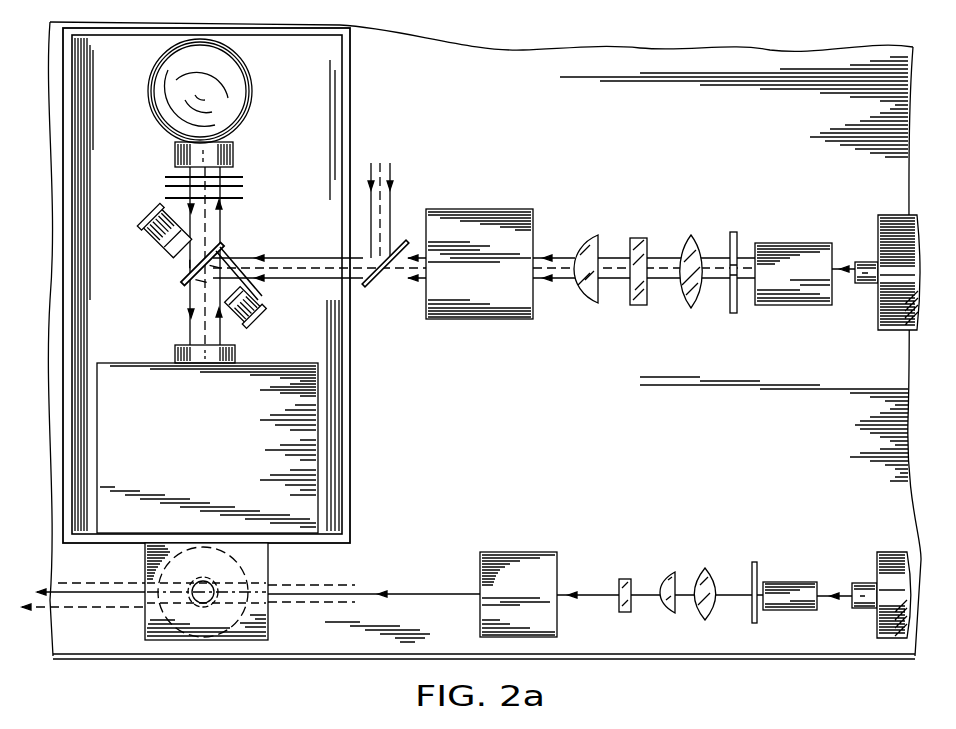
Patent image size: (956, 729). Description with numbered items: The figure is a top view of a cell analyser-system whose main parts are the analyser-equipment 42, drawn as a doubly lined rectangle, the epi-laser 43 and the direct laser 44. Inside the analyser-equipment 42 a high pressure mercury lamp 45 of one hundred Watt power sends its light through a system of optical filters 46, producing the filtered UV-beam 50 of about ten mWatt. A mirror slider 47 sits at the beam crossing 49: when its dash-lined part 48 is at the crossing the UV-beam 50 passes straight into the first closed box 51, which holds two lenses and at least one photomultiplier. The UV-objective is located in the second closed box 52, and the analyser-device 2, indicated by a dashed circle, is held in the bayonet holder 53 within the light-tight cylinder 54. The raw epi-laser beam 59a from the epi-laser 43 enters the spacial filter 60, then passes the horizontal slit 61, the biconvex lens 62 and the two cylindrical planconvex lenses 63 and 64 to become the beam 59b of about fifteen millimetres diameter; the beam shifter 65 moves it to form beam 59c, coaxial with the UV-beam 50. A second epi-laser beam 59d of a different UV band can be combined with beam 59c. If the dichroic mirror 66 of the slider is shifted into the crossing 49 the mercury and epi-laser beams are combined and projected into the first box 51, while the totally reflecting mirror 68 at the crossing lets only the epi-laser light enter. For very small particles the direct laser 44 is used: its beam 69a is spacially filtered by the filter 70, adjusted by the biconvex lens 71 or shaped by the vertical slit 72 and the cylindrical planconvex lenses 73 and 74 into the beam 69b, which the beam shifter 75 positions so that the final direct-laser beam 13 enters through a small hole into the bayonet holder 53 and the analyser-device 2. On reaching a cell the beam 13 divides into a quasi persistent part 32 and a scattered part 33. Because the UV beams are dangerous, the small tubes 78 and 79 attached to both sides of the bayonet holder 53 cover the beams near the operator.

The analyser-device 2 is at (232, 572).
The direct-laser beam 13 is at (413, 594).
The quasi persistent part of direct-laser beam 32 is at (58, 583).
The scattered part of direct-laser beam 33 is at (63, 612).
The analyser-equipment 42 is at (346, 363).
The epi-laser 43 is at (890, 248).
The direct laser 44 is at (880, 570).
The high pressure mercury lamp 45 is at (234, 73).
The system of optical filters 46 is at (172, 158).
The mirror slider 47 is at (262, 312).
The dash-lined part of mirror slider 48 is at (238, 318).
The beam crossing 49 is at (252, 280).
The filtered UV-beam 50 is at (168, 205).
The first closed box 51 is at (318, 449).
The second closed box 52 is at (268, 548).
The bayonet holder 53 is at (162, 620).
The light-tight cylinder 54 is at (250, 618).
The raw epi-laser beam 59a is at (848, 276).
The epi-laser beam of about fifteen mm diameter 59b is at (553, 285).
The shifted epi-laser beam 59c is at (310, 270).
The second epi-laser beam 59d is at (365, 163).
The spacial filter 60 is at (772, 252).
The horizontal slit 61 is at (733, 298).
The biconvex lens 62 is at (688, 258).
The cylindrical planconvex lens 63 is at (640, 302).
The cylindrical planconvex lens 64 is at (585, 250).
The beam shifter 65 is at (477, 213).
The dichroic mirror 66 is at (186, 284).
The totally reflecting mirror 68 is at (147, 243).
The direct-laser beam 69a is at (838, 600).
The shaped direct-laser beam 69b is at (583, 598).
The spacial filter 70 is at (790, 586).
The biconvex lens 71 is at (705, 568).
The vertical slit 72 is at (752, 606).
The cylindrical planconvex lens 73 is at (668, 612).
The cylindrical planconvex lens 74 is at (627, 578).
The beam shifter 75 is at (500, 560).
The small tube 78 is at (340, 586).
The small tube 79 is at (99, 585).